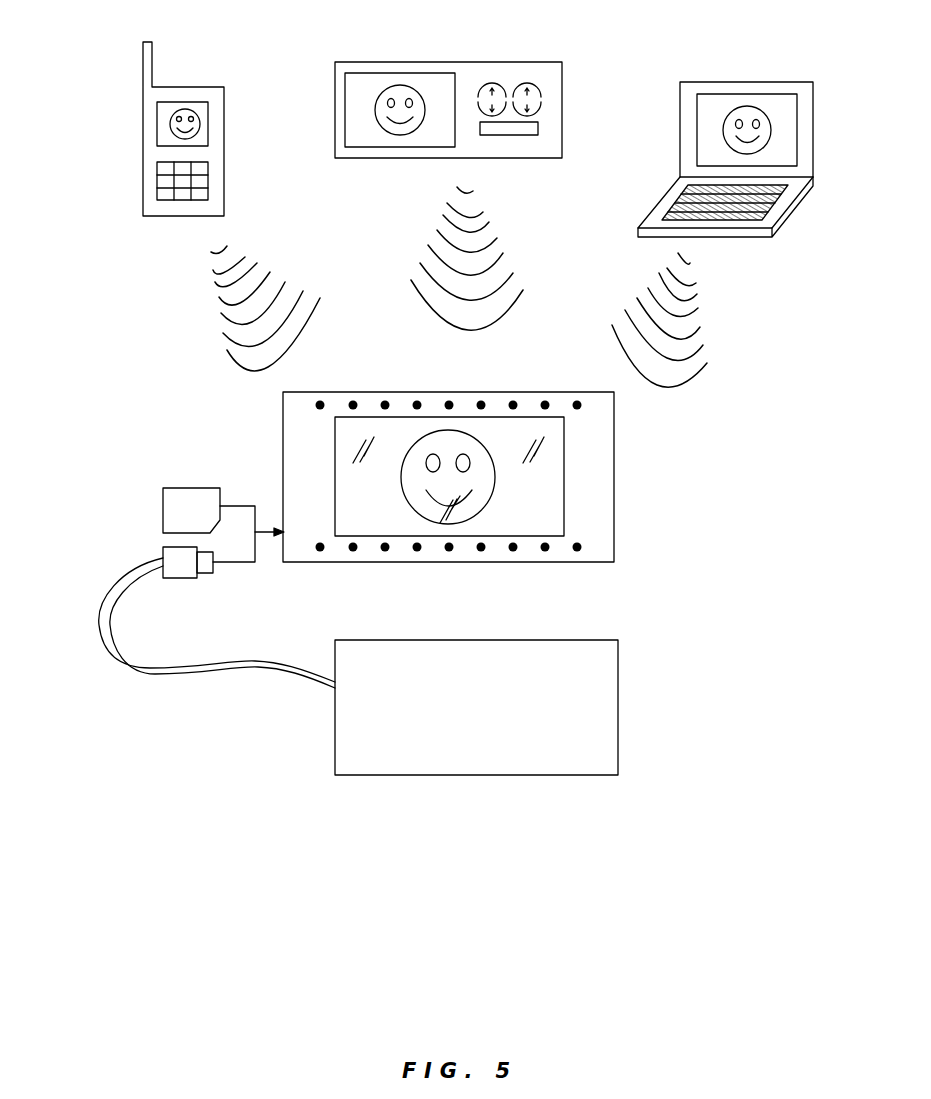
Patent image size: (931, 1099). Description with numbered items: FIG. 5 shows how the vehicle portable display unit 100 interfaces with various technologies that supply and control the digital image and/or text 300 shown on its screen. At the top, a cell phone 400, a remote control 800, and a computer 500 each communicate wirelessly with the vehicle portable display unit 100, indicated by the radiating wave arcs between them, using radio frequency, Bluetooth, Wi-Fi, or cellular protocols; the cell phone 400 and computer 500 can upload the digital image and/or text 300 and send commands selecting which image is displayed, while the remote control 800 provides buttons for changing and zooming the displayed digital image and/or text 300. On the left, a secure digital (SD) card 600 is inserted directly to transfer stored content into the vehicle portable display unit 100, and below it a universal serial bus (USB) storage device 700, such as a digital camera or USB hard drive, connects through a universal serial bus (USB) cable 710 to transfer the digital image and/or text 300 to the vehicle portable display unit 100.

The vehicle portable display unit 100 is at (511, 513).
The digital image and/or text 300 is at (495, 476).
The cell phone 400 is at (189, 87).
The computer 500 is at (745, 82).
The secure digital (SD) card 600 is at (163, 512).
The universal serial bus (USB) storage device 700 is at (475, 775).
The universal serial bus (USB) cable 710 is at (180, 561).
The remote control 800 is at (448, 62).